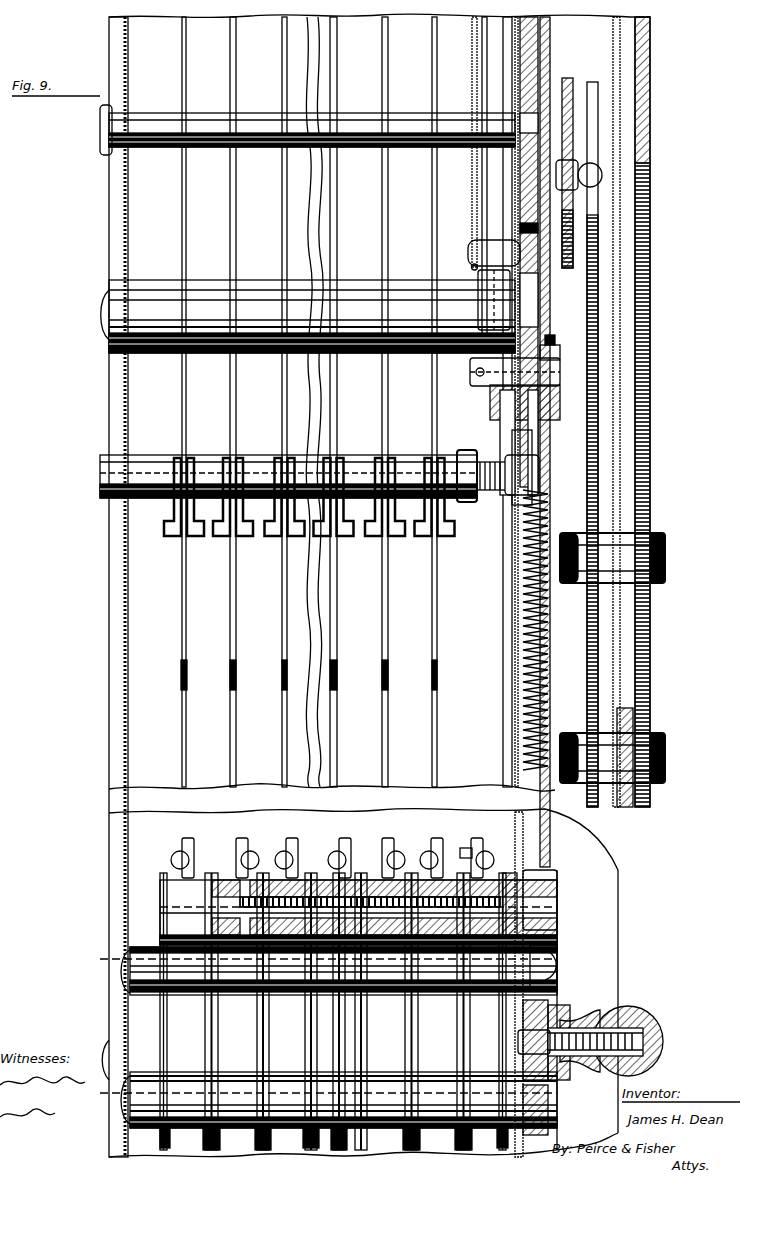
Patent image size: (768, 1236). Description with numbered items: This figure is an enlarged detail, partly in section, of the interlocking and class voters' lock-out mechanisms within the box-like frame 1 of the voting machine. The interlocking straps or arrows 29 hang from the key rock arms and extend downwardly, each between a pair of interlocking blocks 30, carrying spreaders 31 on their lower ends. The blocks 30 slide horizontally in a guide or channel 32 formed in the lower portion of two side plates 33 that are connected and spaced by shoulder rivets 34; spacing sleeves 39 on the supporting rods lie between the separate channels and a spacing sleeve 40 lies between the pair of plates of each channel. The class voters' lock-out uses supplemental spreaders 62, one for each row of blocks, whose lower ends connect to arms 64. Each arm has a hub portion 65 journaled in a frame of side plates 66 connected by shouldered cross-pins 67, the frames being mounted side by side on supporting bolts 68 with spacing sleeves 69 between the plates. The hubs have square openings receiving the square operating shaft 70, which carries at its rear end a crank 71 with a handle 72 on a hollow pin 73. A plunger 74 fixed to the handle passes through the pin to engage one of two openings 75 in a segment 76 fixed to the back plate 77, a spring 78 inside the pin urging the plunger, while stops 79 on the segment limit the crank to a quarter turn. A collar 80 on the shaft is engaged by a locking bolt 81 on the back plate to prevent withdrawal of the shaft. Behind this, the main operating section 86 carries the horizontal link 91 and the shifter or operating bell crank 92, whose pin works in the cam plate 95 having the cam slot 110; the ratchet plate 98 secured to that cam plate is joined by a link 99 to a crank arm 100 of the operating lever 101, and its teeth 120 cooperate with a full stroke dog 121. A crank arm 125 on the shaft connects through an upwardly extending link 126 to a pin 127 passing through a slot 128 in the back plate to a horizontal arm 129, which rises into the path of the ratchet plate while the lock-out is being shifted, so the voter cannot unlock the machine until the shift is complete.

The box-like frame 1 is at (109, 240).
The interlocking straps or arrows 29 is at (282, 222).
The interlocking blocks 30 is at (190, 536).
The spreaders 31 is at (237, 626).
The guide or channel 32 is at (263, 540).
The side plates 33 is at (270, 455).
The shoulder rivets 34 is at (308, 468).
The spacing sleeves 39 is at (182, 455).
The spacing sleeve 40 is at (186, 455).
The supplemental spreaders 62 is at (186, 735).
The arms 64 is at (246, 860).
The hub portion 65 is at (185, 880).
The side plates 66 is at (310, 1018).
The shouldered cross-pins 67 is at (298, 945).
The supporting bolts 68 is at (130, 1062).
The spacing sleeves 69 is at (260, 1000).
The square operating shaft 70 is at (165, 900).
The crank 71 is at (560, 952).
The handle 72 is at (630, 1012).
The hollow pin 73 is at (592, 1022).
The plunger 74 is at (548, 1075).
The openings 75 is at (525, 1040).
The segment 76 is at (538, 1122).
The back plate 77 is at (570, 996).
The spring 78 is at (600, 1075).
The stops 79 is at (563, 1000).
The collar 80 is at (487, 858).
The locking bolt 81 is at (515, 875).
The main operating section 86 is at (516, 176).
The horizontal link 91 is at (487, 285).
The shifter or operating bell crank 92 is at (495, 153).
The cam plate 95 is at (525, 82).
The ratchet plate 98 is at (545, 268).
The link 99 is at (575, 210).
The crank arm 100 is at (593, 465).
The operating lever 101 is at (645, 625).
The cam slot 110 is at (567, 85).
The teeth 120 is at (548, 305).
The full stroke dog 121 is at (545, 437).
The crank arm 125 is at (501, 1062).
The link 126 is at (520, 720).
The pin 127 is at (500, 372).
The slot 128 is at (555, 338).
The horizontal arm 129 is at (548, 415).